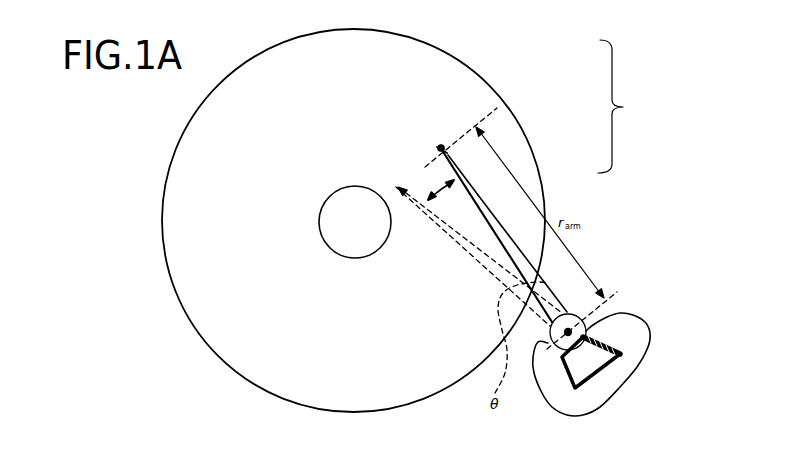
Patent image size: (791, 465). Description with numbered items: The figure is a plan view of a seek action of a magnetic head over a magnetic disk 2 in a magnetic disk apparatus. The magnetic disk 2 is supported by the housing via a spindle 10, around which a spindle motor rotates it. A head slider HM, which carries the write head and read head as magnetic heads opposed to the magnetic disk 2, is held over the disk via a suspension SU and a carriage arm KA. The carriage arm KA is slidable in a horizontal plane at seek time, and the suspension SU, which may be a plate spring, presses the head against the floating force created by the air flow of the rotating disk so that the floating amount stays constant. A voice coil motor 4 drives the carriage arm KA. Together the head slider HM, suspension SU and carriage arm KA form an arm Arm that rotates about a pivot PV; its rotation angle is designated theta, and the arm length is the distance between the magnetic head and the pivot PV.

The magnetic disk 2 is at (187, 317).
The spindle 10 is at (319, 222).
The voice coil motor 4 is at (637, 372).
The head slider HM is at (445, 147).
The suspension SU is at (447, 155).
The carriage arm KA is at (474, 200).
The pivot PV is at (553, 345).
The arm Arm is at (627, 106).